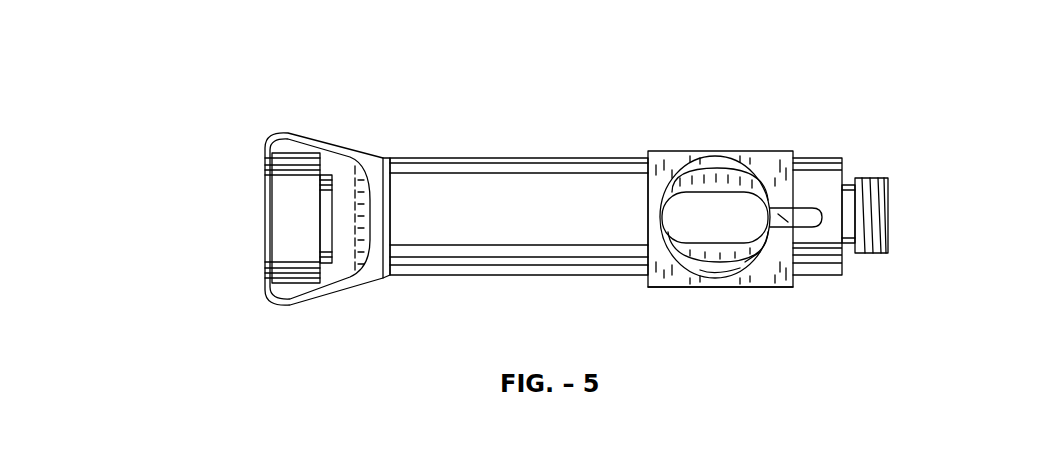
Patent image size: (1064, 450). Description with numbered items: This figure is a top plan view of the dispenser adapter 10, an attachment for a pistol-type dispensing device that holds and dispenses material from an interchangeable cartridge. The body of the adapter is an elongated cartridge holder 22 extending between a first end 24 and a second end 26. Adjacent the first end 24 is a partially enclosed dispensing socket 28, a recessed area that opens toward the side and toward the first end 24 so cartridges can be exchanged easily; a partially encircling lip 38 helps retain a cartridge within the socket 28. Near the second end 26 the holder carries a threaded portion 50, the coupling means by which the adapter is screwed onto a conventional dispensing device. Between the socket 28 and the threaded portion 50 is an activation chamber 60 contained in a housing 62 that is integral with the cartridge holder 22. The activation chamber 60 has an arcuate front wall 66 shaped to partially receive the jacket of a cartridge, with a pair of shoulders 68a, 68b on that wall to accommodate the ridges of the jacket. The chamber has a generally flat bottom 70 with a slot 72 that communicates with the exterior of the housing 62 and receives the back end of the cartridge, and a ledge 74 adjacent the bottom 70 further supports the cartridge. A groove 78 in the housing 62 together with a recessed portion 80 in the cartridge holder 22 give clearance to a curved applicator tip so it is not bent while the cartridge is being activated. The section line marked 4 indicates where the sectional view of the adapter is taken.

The section line 4- 4 is at (255, 218).
The dispenser adapter 10 is at (538, 110).
The cartridge holder 22 is at (472, 262).
The first end 24 is at (247, 254).
The second end 26 is at (898, 206).
The dispensing socket 28 is at (283, 260).
The lip 38 is at (268, 195).
The threaded portion 50 is at (870, 253).
The activation chamber 60 is at (722, 157).
The housing 62 is at (790, 287).
The arcuate front wall 66 is at (665, 165).
The shoulder 68a is at (700, 272).
The shoulder 68b is at (700, 175).
The bottom 70 is at (713, 255).
The slot 72 is at (747, 272).
The ledge 74 is at (727, 270).
The groove 78 is at (795, 200).
The recessed portion 80 is at (810, 215).